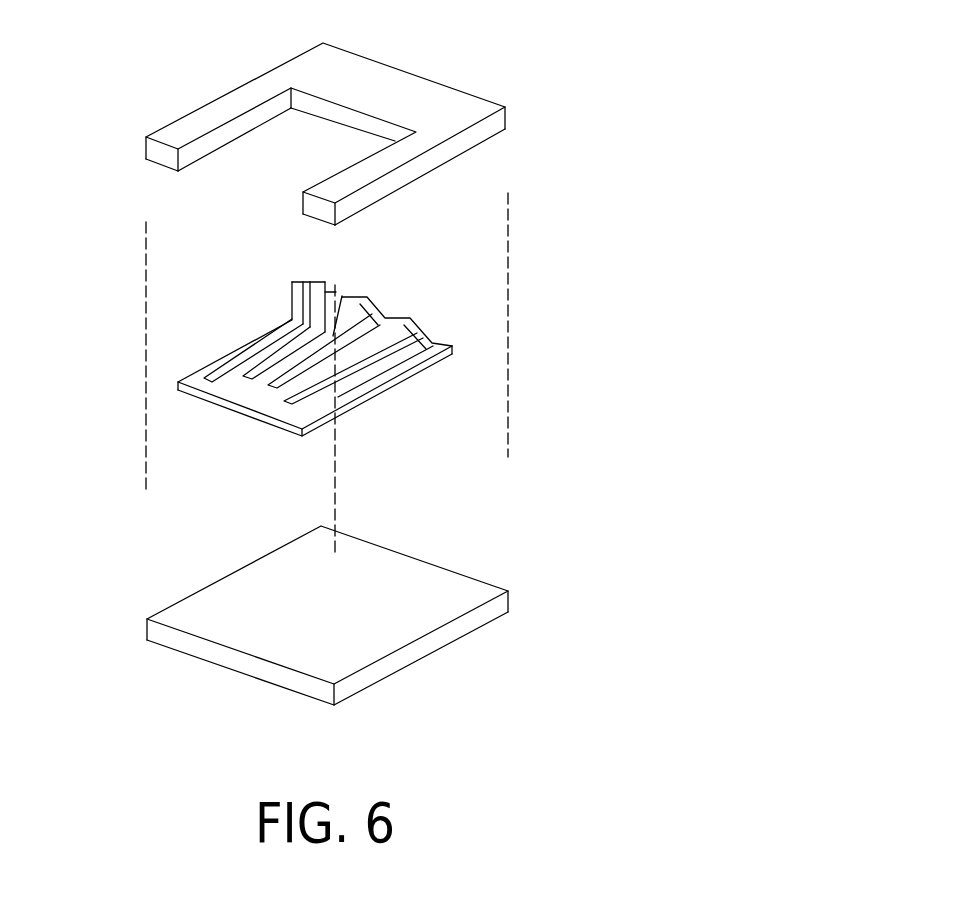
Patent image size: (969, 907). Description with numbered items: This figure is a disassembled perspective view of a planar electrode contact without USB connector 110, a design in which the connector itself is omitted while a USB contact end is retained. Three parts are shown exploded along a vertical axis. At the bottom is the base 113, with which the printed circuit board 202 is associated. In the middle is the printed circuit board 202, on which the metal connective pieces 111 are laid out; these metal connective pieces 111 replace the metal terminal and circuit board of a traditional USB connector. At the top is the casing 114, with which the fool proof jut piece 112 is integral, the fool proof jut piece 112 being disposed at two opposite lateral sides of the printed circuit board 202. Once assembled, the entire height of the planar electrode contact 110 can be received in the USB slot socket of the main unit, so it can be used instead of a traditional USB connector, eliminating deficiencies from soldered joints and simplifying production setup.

The planar electrode contact without USB connector 110 is at (651, 186).
The metal connective pieces 111 is at (280, 347).
The fool proof jut piece 112 is at (178, 94).
The base 113 is at (289, 615).
The casing 114 is at (285, 112).
The printed circuit board 202 is at (332, 372).